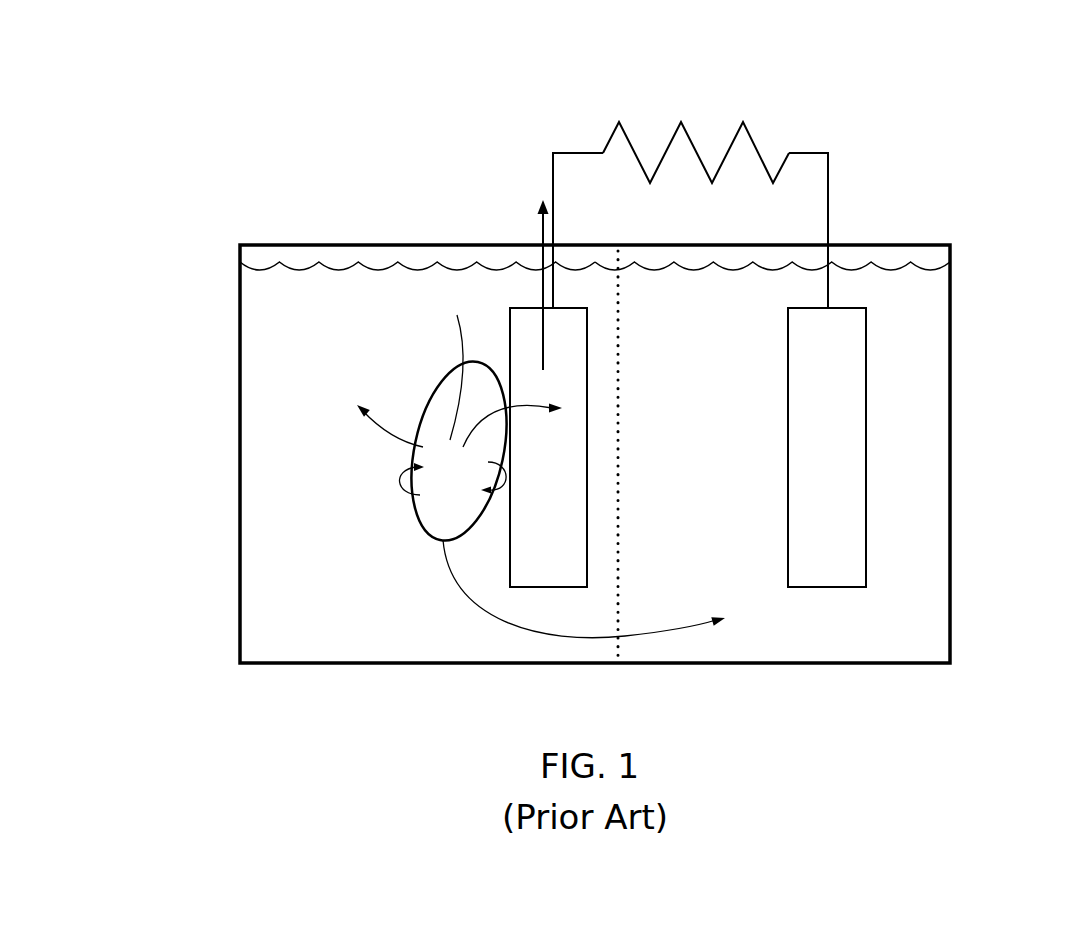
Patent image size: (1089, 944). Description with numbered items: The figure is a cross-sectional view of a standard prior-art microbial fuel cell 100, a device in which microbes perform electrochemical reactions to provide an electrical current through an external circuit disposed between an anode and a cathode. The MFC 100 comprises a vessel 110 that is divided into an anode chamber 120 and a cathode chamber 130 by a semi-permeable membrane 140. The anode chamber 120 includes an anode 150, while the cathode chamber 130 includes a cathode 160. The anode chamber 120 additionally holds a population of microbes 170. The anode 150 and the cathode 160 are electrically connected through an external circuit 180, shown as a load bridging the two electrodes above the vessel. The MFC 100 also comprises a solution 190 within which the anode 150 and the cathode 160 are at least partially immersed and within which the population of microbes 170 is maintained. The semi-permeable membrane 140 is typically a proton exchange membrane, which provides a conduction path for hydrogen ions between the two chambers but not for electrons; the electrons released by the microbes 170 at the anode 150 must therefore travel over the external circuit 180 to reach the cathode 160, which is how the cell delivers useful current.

The microbial fuel cell 100 is at (935, 180).
The vessel 110 is at (357, 243).
The anode chamber 120 is at (287, 547).
The cathode chamber 130 is at (918, 547).
The semi-permeable membrane 140 is at (620, 398).
The anode 150 is at (567, 577).
The cathode 160 is at (840, 577).
The population of microbes 170 is at (432, 403).
The external circuit 180 is at (603, 152).
The solution 190 is at (767, 268).